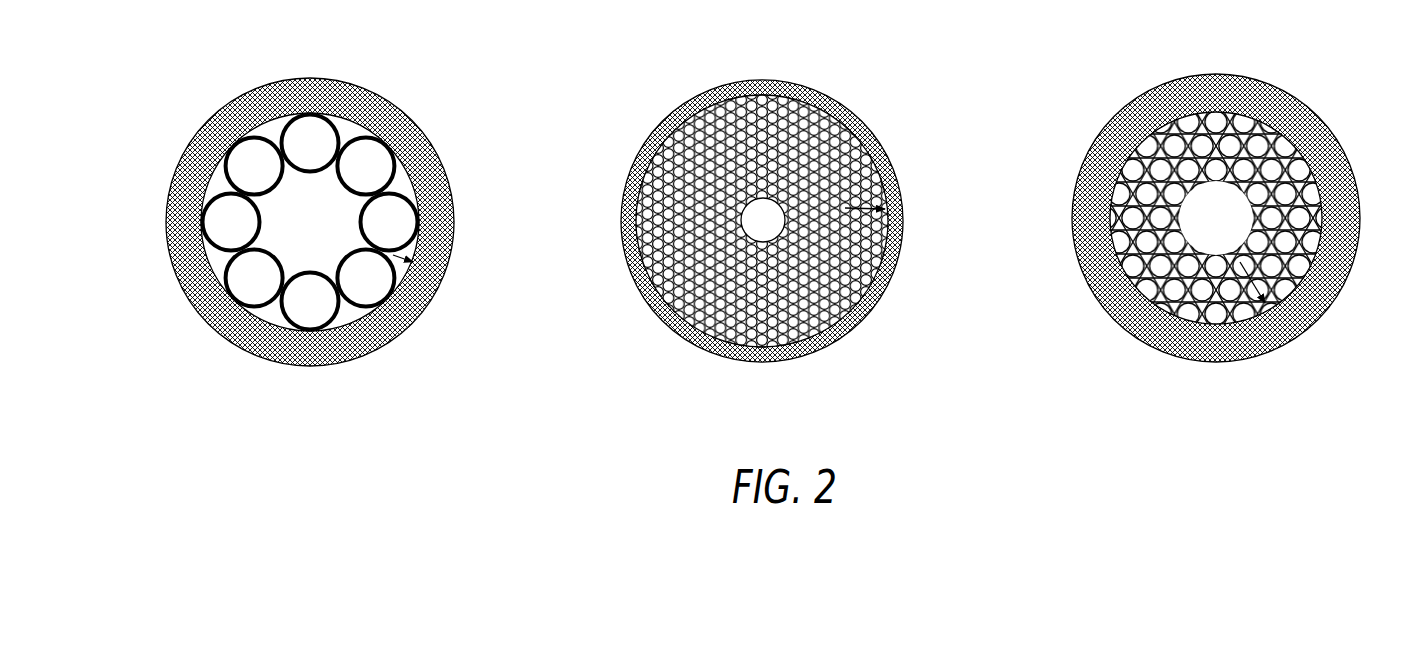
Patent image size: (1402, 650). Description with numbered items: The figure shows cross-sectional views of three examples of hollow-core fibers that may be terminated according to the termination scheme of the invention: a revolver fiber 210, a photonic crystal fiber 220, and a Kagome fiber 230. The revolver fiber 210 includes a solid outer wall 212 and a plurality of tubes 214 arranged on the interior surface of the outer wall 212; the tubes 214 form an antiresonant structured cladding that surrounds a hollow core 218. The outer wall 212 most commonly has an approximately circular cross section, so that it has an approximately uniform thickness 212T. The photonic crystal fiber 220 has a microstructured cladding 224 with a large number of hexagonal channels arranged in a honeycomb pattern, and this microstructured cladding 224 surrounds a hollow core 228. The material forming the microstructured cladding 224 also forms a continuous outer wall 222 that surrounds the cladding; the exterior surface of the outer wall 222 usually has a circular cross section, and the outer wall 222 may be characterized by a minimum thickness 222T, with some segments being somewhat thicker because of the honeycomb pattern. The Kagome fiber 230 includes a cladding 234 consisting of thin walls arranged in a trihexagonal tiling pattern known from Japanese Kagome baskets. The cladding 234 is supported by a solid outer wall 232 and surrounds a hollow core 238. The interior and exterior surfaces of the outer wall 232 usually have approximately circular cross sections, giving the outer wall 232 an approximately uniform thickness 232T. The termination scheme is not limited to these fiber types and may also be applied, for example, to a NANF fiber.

The revolver fiber 210 is at (333, 195).
The solid outer wall 212 is at (400, 110).
The tubes 214 is at (402, 176).
The hollow core 218 is at (327, 235).
The thickness 212T is at (447, 277).
The photonic crystal fiber 220 is at (773, 194).
The continuous outer wall 222 is at (838, 120).
The microstructured cladding 224 is at (754, 174).
The hollow core 228 is at (781, 235).
The minimum thickness 222T is at (908, 208).
The Kagome fiber 230 is at (1199, 224).
The solid outer wall 232 is at (1300, 103).
The cladding 234 is at (1291, 177).
The hollow core 238 is at (1234, 231).
The thickness 232T is at (1292, 345).